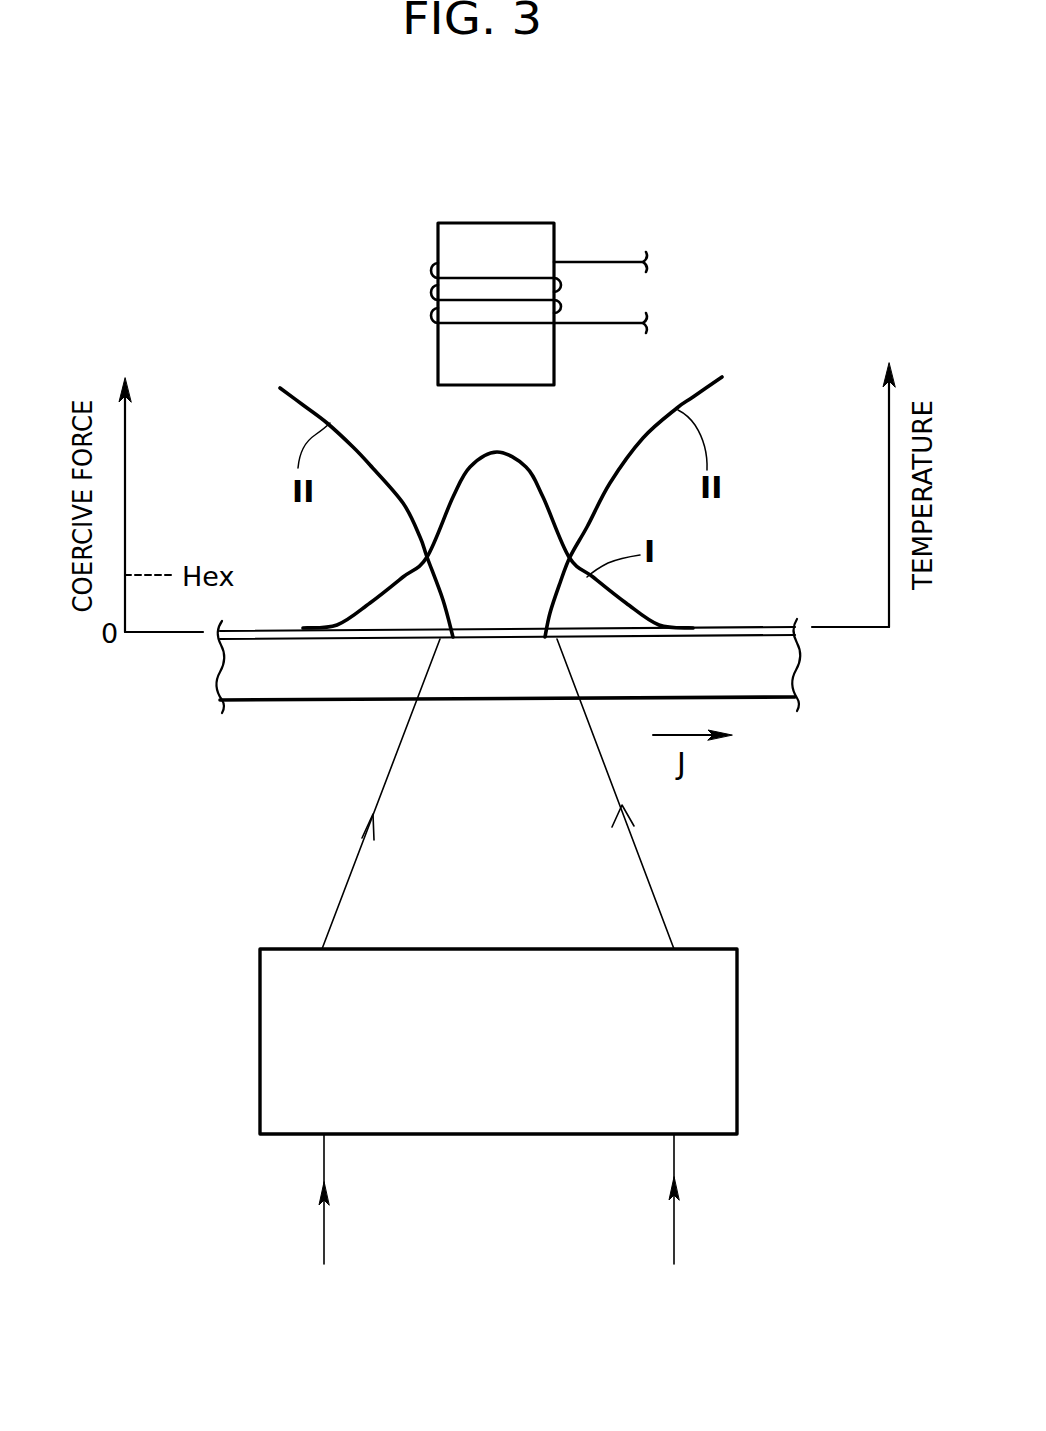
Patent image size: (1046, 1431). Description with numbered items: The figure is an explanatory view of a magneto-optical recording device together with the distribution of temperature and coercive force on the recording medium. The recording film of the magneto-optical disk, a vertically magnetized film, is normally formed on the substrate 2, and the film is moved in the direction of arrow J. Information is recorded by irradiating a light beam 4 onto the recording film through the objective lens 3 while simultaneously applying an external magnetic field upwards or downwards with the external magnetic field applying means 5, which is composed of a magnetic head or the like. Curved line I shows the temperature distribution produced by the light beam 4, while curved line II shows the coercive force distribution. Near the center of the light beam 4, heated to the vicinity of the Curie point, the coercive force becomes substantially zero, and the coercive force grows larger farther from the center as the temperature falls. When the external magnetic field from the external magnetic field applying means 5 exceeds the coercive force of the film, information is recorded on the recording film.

The substrate 2 is at (270, 680).
The objective lens 3 is at (291, 1033).
The light beam 4 is at (346, 885).
The external magnetic field applying means 5 is at (437, 358).